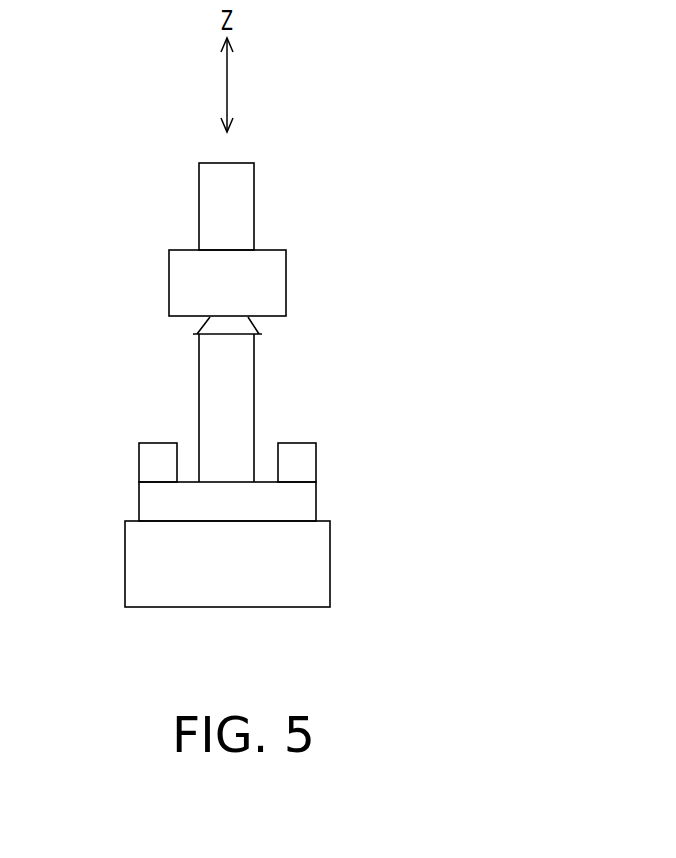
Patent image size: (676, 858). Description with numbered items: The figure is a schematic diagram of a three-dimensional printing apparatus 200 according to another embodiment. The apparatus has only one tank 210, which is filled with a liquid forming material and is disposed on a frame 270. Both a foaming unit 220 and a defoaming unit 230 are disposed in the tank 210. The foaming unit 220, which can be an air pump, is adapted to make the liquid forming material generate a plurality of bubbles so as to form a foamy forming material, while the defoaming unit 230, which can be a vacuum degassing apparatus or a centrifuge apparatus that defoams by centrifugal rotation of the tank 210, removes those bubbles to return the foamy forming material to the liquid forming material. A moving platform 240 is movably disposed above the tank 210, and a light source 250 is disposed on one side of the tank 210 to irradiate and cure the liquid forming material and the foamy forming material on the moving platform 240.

The three-dimensional printing apparatus 200 is at (580, 639).
The tank 210 is at (316, 503).
The foaming unit 220 is at (316, 462).
The defoaming unit 230 is at (139, 462).
The moving platform 240 is at (254, 206).
The light source 250 is at (286, 283).
The frame 270 is at (318, 563).